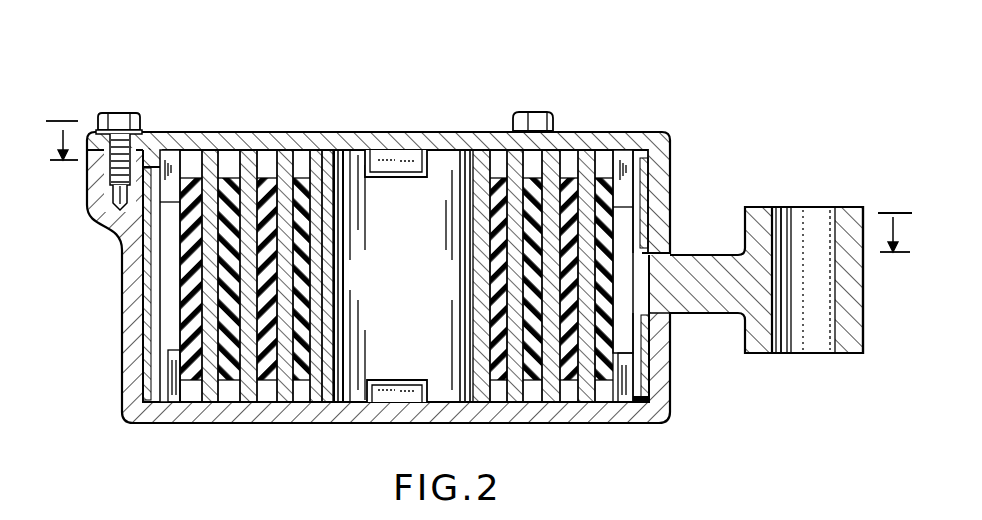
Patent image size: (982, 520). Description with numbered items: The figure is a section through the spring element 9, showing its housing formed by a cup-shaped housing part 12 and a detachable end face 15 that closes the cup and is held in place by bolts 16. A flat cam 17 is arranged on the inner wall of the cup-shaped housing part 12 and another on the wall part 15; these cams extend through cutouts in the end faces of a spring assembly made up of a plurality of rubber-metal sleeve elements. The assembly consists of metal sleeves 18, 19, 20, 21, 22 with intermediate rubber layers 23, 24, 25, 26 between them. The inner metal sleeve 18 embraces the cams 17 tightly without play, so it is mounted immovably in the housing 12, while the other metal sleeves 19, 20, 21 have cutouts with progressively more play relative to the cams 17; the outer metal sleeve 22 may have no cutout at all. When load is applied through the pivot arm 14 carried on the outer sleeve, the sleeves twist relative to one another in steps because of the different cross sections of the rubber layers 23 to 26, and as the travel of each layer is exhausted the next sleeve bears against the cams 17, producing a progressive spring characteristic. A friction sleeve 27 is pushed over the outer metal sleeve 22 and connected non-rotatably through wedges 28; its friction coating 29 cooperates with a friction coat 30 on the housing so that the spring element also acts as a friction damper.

The spring element 9 is at (632, 78).
The cup-shaped housing part 12 is at (128, 257).
The pivot arm 14 is at (697, 270).
The end face 15 is at (228, 138).
The bolt 16 is at (133, 110).
The flat cam 17 is at (398, 160).
The inner metal sleeve 18 is at (482, 400).
The metal sleeve 19 is at (513, 400).
The metal sleeve 20 is at (550, 400).
The metal sleeve 21 is at (585, 400).
The outer metal sleeve 22 is at (603, 400).
The intermediate rubber layer 23 is at (496, 178).
The intermediate rubber layer 24 is at (536, 178).
The intermediate rubber layer 25 is at (604, 187).
The intermediate rubber layer 26 is at (616, 177).
The friction sleeve 27 is at (646, 160).
The wedge 28 is at (628, 338).
The friction coating 29 is at (647, 402).
The friction coat 30 is at (650, 378).